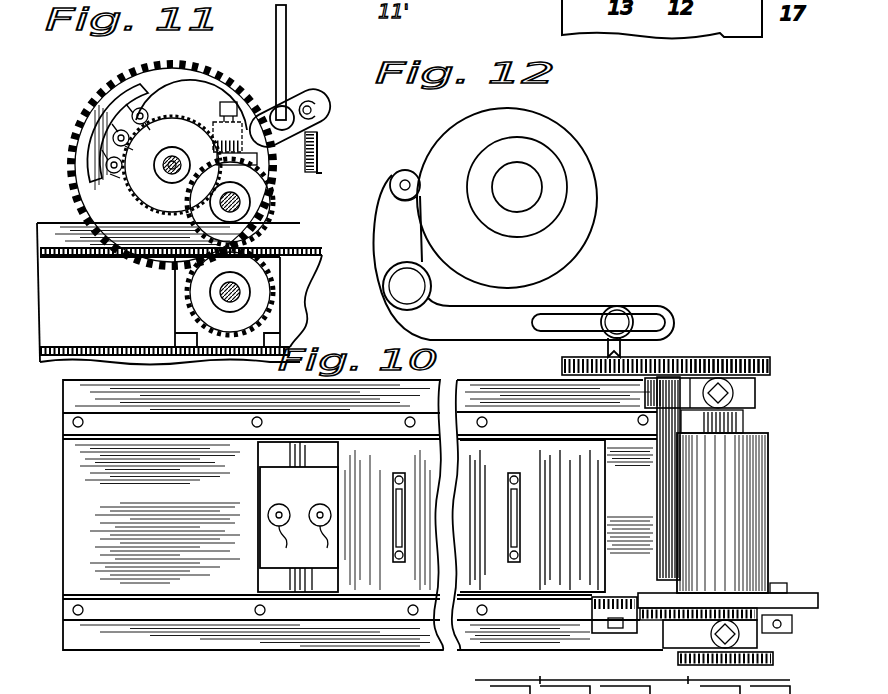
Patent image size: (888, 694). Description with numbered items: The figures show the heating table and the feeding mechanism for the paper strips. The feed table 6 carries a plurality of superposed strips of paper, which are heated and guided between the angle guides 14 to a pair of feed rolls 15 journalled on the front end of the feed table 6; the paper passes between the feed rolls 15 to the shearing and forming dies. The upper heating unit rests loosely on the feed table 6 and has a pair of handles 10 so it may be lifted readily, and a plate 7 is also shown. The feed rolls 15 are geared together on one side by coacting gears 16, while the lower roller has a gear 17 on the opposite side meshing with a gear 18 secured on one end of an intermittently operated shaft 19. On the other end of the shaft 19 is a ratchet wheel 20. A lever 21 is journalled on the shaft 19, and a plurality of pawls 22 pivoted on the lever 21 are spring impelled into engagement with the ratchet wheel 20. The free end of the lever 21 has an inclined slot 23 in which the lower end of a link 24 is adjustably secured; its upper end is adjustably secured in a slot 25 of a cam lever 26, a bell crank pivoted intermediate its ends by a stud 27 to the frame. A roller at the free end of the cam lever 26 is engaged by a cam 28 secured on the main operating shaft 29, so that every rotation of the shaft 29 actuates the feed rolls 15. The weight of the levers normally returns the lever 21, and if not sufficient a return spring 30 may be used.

In FIG. 10, the feed table 6 is at (218, 570).
In FIG. 10, the plate 7 is at (431, 516).
In FIG. 10, the handles 10 is at (397, 550).
In FIG. 10, the angle guides 14 is at (198, 425).
In FIG. 11, the feed rolls 15 is at (268, 222).
In FIG. 10, the feed rolls 15 is at (747, 528).
In FIG. 10, the coacting gears 16 is at (770, 663).
In FIG. 10, the gear 17 is at (750, 360).
In FIG. 11, the gear 18 is at (190, 75).
In FIG. 10, the gear 18 is at (645, 360).
In FIG. 11, the intermittently operated shaft 19 is at (163, 177).
In FIG. 10, the intermittently operated shaft 19 is at (670, 510).
In FIG. 11, the ratchet wheel 20 is at (306, 155).
In FIG. 10, the ratchet wheel 20 is at (673, 622).
In FIG. 11, the lever 21 is at (205, 100).
In FIG. 10, the lever 21 is at (618, 600).
In FIG. 11, the pawls 22 is at (120, 140).
In FIG. 11, the inclined slot 23 is at (313, 118).
In FIG. 11, the link 24 is at (284, 65).
In FIG. 12, the link 24 is at (612, 345).
In FIG. 12, the slot 25 is at (580, 323).
In FIG. 12, the cam lever 26 is at (505, 327).
In FIG. 12, the stud 27 is at (403, 289).
In FIG. 12, the cam 28 is at (573, 205).
In FIG. 12, the main operating shaft 29 is at (525, 185).
In FIG. 11, the return spring 30 is at (240, 167).